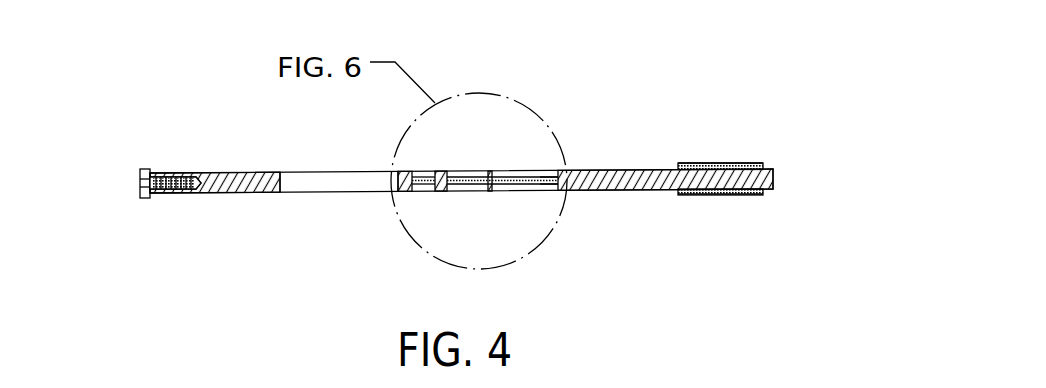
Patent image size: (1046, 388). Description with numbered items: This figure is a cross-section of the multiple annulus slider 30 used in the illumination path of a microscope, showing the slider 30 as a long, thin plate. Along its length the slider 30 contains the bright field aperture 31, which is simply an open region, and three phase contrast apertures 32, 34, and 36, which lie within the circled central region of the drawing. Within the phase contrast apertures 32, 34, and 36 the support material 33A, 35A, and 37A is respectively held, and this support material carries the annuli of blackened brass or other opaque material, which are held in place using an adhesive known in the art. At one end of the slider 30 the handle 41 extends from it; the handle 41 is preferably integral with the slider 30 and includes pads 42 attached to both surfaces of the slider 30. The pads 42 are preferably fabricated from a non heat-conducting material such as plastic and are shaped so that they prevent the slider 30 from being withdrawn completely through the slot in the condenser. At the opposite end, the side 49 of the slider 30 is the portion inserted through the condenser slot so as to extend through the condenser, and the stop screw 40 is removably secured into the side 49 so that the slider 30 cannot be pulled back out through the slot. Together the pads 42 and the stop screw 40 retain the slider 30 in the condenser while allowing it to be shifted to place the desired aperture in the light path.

The slider 30 is at (645, 105).
The bright field aperture 31 is at (345, 193).
The phase contrast aperture 32 is at (427, 170).
The support material 33A is at (424, 193).
The phase contrast aperture 34 is at (458, 170).
The support material 35A is at (468, 192).
The phase contrast aperture 36 is at (532, 170).
The support material 37A is at (540, 192).
The stop screw 40 is at (140, 188).
The handle 41 is at (749, 135).
The pads 42 is at (755, 163).
The side 49 is at (140, 183).